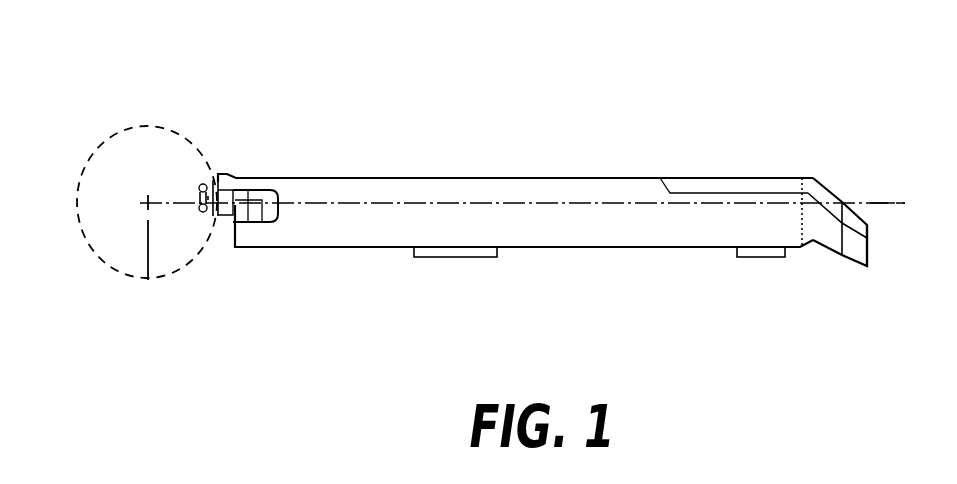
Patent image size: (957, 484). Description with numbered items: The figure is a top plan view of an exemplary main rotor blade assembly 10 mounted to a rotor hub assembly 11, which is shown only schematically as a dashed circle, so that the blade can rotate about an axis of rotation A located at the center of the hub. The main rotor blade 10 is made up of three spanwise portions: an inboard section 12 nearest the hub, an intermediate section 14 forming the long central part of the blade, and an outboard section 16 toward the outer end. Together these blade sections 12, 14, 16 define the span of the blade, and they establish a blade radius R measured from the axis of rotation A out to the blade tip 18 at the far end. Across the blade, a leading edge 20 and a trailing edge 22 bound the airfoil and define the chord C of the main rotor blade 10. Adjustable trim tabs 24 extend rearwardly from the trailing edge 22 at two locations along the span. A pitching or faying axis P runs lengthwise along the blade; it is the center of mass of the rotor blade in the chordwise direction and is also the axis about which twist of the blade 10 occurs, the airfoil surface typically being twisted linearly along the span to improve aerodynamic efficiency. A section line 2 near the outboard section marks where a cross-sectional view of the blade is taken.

The main rotor blade assembly 10 is at (450, 92).
The rotor hub assembly 11 is at (98, 152).
The inboard section 12 is at (268, 160).
The intermediate section 14 is at (517, 160).
The outboard section 16 is at (803, 171).
The blade tip 18 is at (868, 250).
The leading edge 20 is at (580, 178).
The trailing edge 22 is at (603, 249).
The adjustable trim tabs 24 is at (457, 258).
The section line 2- 2 is at (693, 127).
The axis of rotation A is at (148, 203).
The chord C is at (536, 179).
The blade radius R is at (868, 360).
The pitching or faying axis P is at (868, 203).